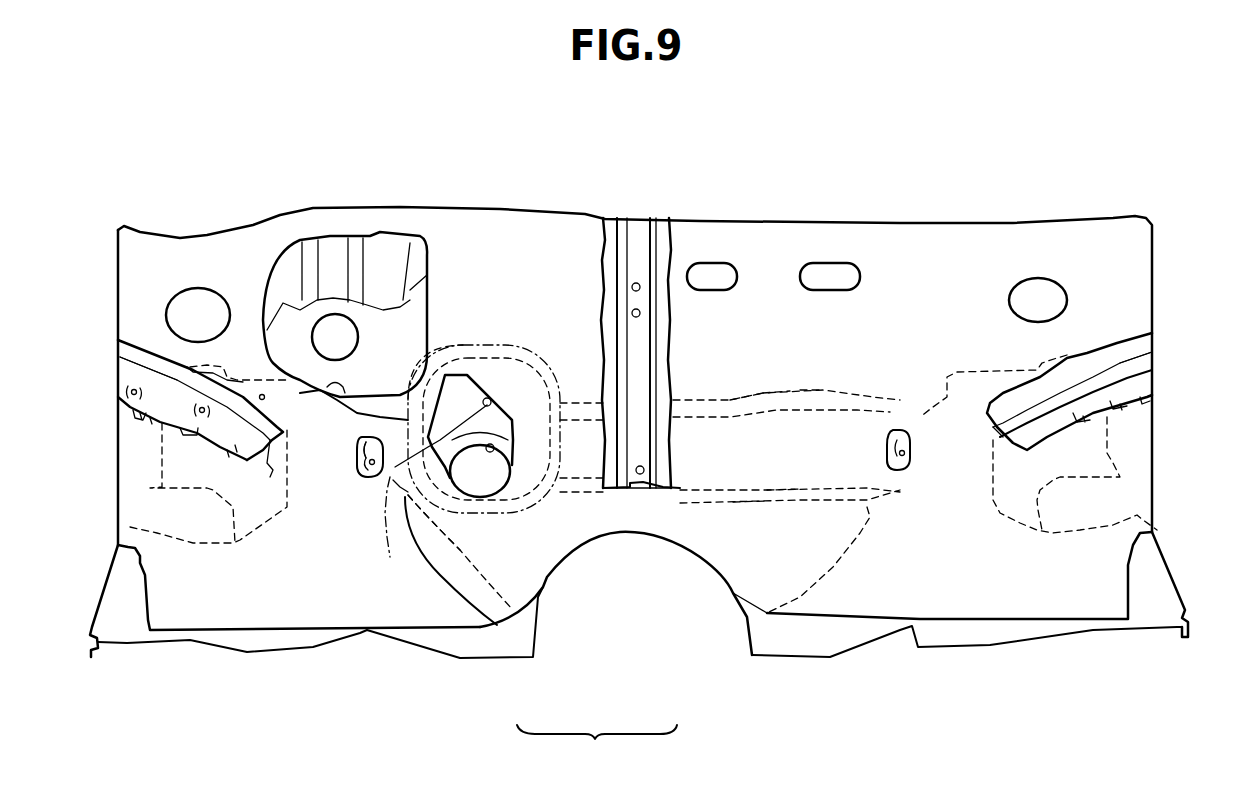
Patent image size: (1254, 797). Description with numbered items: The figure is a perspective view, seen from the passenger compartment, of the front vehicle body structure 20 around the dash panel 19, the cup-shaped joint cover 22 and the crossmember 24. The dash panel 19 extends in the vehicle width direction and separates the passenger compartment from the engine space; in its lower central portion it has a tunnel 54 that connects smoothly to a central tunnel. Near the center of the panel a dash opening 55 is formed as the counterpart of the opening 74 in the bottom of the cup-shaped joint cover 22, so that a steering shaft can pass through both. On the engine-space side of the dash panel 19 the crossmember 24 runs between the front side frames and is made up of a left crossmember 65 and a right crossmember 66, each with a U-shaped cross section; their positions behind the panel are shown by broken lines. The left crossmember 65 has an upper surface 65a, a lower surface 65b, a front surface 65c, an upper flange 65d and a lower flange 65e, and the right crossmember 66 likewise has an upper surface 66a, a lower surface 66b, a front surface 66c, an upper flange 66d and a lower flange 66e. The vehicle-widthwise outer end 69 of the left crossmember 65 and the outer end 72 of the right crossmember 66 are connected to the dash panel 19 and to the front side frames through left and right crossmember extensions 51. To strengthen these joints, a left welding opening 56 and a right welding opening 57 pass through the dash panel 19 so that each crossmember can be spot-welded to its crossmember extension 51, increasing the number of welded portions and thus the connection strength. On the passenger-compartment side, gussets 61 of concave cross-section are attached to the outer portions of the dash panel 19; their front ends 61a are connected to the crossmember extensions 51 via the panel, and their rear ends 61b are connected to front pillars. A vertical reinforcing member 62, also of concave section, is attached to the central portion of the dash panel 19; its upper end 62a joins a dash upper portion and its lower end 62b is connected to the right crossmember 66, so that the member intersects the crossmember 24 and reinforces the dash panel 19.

The dash panel 19 is at (899, 220).
The front vehicle body structure 20 is at (133, 90).
The cup-shaped joint cover 22 is at (505, 519).
The crossmember 24 is at (597, 747).
The crossmember extension 51 is at (906, 426).
The tunnel 54 is at (633, 533).
The dash opening 55 is at (489, 399).
The left welding opening 56 is at (357, 443).
The right welding opening 57 is at (360, 430).
The gusset 61 is at (158, 421).
The front end of gusset 61a is at (268, 472).
The rear end of gusset 61b is at (118, 375).
The vertical reinforcing member 62 is at (603, 214).
The upper end of vertical reinforcing member 62a is at (641, 218).
The lower end of vertical reinforcing member 62b is at (642, 490).
The left crossmember 65 is at (401, 516).
The upper surface of left crossmember 65a is at (364, 428).
The lower surface of left crossmember 65b is at (454, 436).
The front surface of left crossmember 65c is at (384, 535).
The upper flange of left crossmember 65d is at (428, 352).
The lower flange of left crossmember 65e is at (446, 522).
The right crossmember 66 is at (583, 497).
The upper surface of right crossmember 66a is at (747, 418).
The lower surface of right crossmember 66b is at (780, 490).
The front surface of right crossmember 66c is at (767, 417).
The upper flange of right crossmember 66d is at (800, 400).
The lower flange of right crossmember 66e is at (747, 500).
The outer end of left crossmember 69 is at (363, 482).
The outer end of right crossmember 72 is at (900, 460).
The joint cover opening 74 is at (490, 444).